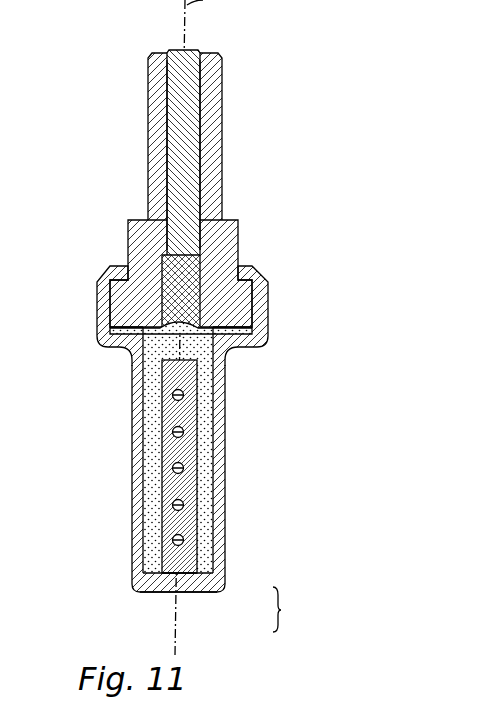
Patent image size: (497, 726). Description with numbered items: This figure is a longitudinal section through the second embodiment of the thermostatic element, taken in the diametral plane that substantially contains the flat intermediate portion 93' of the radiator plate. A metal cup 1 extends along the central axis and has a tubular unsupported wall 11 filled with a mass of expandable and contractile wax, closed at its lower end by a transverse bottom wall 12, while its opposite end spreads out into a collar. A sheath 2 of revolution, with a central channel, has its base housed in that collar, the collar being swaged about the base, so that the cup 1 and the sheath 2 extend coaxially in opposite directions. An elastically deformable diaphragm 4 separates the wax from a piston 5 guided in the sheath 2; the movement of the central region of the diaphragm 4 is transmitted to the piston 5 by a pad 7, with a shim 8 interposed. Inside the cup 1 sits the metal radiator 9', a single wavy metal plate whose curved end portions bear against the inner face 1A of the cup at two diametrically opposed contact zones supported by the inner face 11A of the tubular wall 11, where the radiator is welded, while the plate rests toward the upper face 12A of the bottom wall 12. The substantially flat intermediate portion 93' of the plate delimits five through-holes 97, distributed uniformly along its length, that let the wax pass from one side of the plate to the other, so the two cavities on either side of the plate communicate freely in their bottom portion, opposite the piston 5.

The metal cup 1 is at (96, 303).
The sheath 2 is at (147, 155).
The elastically deformable diaphragm 4 is at (237, 246).
The piston 5 is at (177, 51).
The pad 7 is at (222, 243).
The shim 8 is at (203, 150).
The metal radiator 9' is at (207, 454).
The tubular unsupported wall 11 is at (133, 492).
The closed transverse bottom wall 12 is at (158, 593).
The intermediate portion 93' is at (219, 466).
The through-holes 97 is at (162, 393).
The inner face of the tubular portion 11A is at (193, 556).
The upper face of the bottom wall 12A is at (198, 580).
The inner face of the cup 1A is at (292, 609).